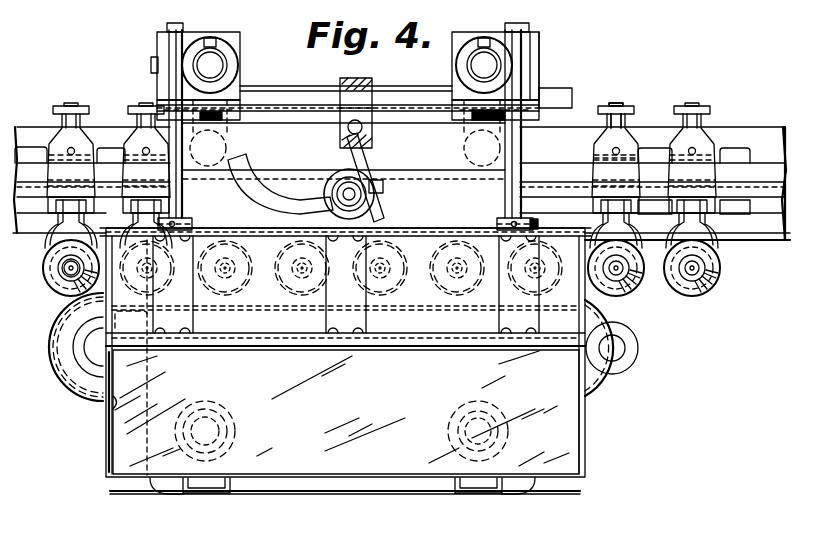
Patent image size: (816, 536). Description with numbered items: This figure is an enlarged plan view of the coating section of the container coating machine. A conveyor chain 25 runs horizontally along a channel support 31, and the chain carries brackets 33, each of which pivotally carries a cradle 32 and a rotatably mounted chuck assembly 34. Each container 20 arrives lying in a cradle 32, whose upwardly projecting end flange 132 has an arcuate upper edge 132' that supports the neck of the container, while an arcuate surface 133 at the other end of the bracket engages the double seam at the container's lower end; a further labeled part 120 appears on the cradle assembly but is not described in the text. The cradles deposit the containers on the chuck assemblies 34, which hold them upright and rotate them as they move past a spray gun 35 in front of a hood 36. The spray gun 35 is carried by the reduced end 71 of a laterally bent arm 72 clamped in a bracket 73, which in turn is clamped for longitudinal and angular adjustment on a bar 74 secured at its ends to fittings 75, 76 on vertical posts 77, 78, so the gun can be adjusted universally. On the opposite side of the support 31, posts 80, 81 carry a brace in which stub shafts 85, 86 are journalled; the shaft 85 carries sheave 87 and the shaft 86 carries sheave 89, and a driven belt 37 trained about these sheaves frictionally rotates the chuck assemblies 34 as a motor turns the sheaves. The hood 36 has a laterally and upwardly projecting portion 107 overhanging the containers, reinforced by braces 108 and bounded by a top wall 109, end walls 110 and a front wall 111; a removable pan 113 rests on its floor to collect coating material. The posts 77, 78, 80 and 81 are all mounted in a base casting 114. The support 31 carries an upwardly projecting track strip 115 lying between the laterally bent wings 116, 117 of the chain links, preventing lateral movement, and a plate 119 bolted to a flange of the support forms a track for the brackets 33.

The container 20 is at (675, 299).
The conveyor chain 25 is at (42, 149).
The support 31 is at (577, 133).
The cradle 32 is at (130, 130).
The bracket 33 is at (43, 252).
The chuck assembly 34 is at (46, 283).
The spray gun 35 is at (373, 177).
The hood 36 is at (338, 488).
The belt 37 is at (587, 403).
The reduced end 71 is at (385, 207).
The laterally bent arm 72 is at (371, 158).
The bracket 73 is at (364, 100).
The bar 74 is at (299, 100).
The fitting 75 is at (544, 78).
The fitting 76 is at (200, 102).
The vertical post 77 is at (472, 56).
The vertical post 78 is at (221, 48).
The post 80 is at (474, 419).
The post 81 is at (212, 423).
The stub shaft 85 is at (621, 361).
The stub shaft 86 is at (83, 356).
The sheave 87 is at (656, 354).
The sheave 89 is at (90, 384).
The laterally and upwardly projecting portion 107 is at (420, 303).
The brace 108 is at (180, 317).
The top wall 109 is at (425, 253).
The end wall 110 is at (60, 337).
The front wall 111 is at (233, 230).
The removable pan 113 is at (117, 416).
The base casting 114 is at (380, 484).
The track strip 115 is at (770, 240).
The wing 116 is at (744, 150).
The wing 117 is at (733, 194).
The plate 119 is at (729, 240).
The bottle neck 120 is at (639, 127).
The end flange 132 is at (635, 161).
The arcuate upper edge 132' is at (647, 79).
The arcuate surface 133 is at (617, 207).